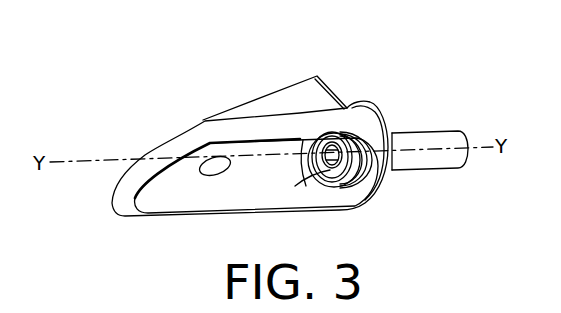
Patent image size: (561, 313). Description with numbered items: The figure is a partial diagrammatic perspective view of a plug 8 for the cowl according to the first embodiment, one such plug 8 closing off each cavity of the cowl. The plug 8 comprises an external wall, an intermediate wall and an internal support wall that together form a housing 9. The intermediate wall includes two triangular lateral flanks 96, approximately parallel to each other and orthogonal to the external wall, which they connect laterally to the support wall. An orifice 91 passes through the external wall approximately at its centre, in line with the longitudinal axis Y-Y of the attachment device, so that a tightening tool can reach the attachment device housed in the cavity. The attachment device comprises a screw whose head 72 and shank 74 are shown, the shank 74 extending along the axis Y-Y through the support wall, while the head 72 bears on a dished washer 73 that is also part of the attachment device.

The plug 8 is at (406, 88).
The housing 9 is at (182, 136).
The lateral flank 96 is at (308, 89).
The shank 74 is at (434, 162).
The passage orifice 91 is at (215, 173).
The head 72 is at (322, 168).
The dished washer 73 is at (369, 181).